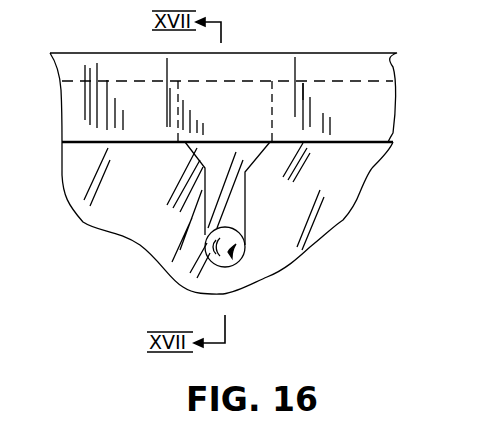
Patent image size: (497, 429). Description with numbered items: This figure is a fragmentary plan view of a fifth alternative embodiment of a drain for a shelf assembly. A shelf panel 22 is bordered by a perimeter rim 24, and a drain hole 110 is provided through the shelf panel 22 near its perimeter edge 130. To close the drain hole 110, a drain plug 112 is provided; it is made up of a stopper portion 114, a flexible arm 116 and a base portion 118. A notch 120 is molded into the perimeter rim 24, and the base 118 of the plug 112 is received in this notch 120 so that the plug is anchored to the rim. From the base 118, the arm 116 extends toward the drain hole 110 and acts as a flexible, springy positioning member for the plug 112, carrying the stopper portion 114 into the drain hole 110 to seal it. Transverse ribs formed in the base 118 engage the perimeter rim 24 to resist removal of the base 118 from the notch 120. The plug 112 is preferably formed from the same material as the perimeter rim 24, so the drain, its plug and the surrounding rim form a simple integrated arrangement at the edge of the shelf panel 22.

The shelf panel 22 is at (352, 192).
The perimeter rim 24 is at (386, 58).
The drain hole 110 is at (251, 257).
The drain plug 112 is at (198, 211).
The stopper portion 114 is at (235, 250).
The flexible arm 116 is at (242, 187).
The base portion 118 is at (188, 153).
The notch 120 is at (232, 81).
The perimeter edge 130 is at (304, 80).